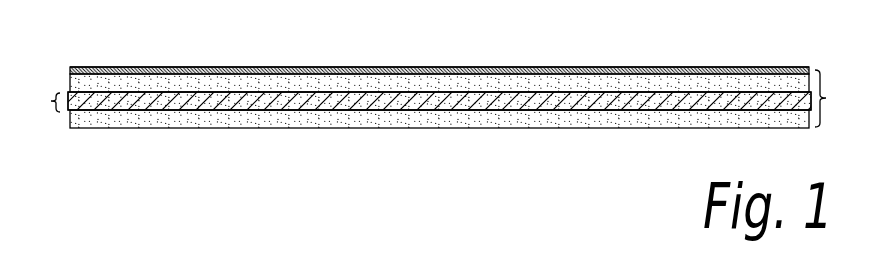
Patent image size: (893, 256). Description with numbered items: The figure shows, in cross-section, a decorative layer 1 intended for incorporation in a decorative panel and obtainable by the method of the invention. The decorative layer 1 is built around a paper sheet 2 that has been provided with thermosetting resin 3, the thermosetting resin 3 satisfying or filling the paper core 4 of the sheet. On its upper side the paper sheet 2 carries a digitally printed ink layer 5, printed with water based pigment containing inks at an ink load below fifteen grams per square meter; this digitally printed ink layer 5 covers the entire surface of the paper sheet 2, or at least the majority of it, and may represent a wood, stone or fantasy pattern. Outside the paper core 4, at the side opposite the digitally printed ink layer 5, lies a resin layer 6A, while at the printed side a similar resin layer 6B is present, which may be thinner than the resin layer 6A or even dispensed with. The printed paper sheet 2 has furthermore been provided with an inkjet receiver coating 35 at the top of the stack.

The decorative layer 1 is at (826, 98).
The paper sheet 2 is at (50, 101).
The thermosetting resin 3 is at (212, 120).
The paper core 4 is at (481, 93).
The digitally printed ink layer 5 is at (470, 70).
The resin layer 6A is at (299, 118).
The resin layer 6B is at (278, 83).
The inkjet receiver coating 35 is at (712, 72).